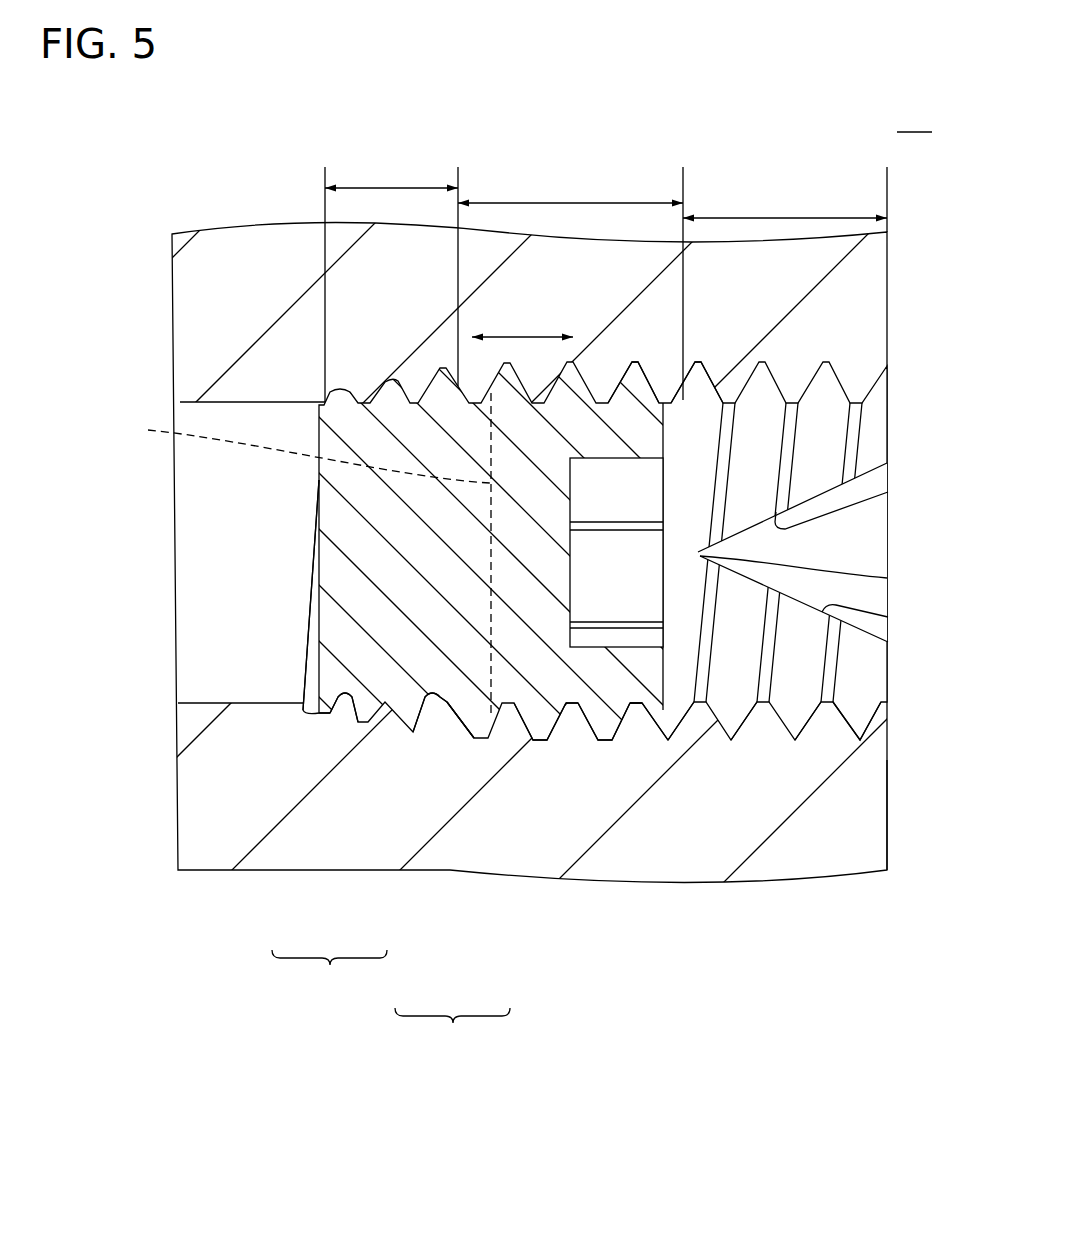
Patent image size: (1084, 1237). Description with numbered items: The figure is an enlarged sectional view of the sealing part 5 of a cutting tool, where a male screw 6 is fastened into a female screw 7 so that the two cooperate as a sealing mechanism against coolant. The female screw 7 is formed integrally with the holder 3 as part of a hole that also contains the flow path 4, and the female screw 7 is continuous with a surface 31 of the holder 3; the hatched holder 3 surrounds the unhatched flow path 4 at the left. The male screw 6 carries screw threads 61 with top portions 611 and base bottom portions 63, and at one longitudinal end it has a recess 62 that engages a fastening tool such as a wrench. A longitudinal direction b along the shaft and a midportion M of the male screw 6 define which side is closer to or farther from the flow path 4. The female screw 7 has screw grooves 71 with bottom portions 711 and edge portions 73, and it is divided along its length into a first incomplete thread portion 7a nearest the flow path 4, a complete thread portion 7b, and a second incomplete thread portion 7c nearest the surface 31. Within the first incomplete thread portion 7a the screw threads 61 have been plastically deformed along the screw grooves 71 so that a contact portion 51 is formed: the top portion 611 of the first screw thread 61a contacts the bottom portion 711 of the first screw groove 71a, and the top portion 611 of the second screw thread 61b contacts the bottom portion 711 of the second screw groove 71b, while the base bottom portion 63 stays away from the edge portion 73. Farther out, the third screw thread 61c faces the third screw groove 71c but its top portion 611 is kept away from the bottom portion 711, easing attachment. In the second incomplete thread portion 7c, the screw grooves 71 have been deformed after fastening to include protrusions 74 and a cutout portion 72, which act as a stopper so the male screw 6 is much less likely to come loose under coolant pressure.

The holder 3 is at (813, 833).
The surface of the holder 31 is at (892, 810).
The flow path 4 is at (230, 597).
The sealing part 5 is at (914, 120).
The male screw 6 is at (319, 489).
The screw threads 61 is at (538, 742).
The top portion 611 is at (494, 858).
The first screw thread 61a is at (360, 724).
The second screw thread 61b is at (413, 734).
The third screw thread 61c is at (605, 742).
The recess 62 is at (645, 605).
The base bottom portion 63 is at (620, 412).
The female screw 7 is at (820, 448).
The screw grooves 71 is at (572, 705).
The bottom portion 711 is at (550, 858).
The first screw groove 71a is at (340, 700).
The second screw groove 71b is at (447, 704).
The third screw groove 71c is at (636, 705).
The cutout portion 72 is at (868, 540).
The edge portion 73 is at (610, 416).
The protrusion 74 is at (888, 617).
The contact portion 51 is at (391, 1000).
The first incomplete thread portion 7a is at (391, 280).
The complete thread portion 7b is at (570, 283).
The second incomplete thread portion 7c is at (785, 199).
The longitudinal direction b is at (522, 337).
The midportion M is at (306, 451).